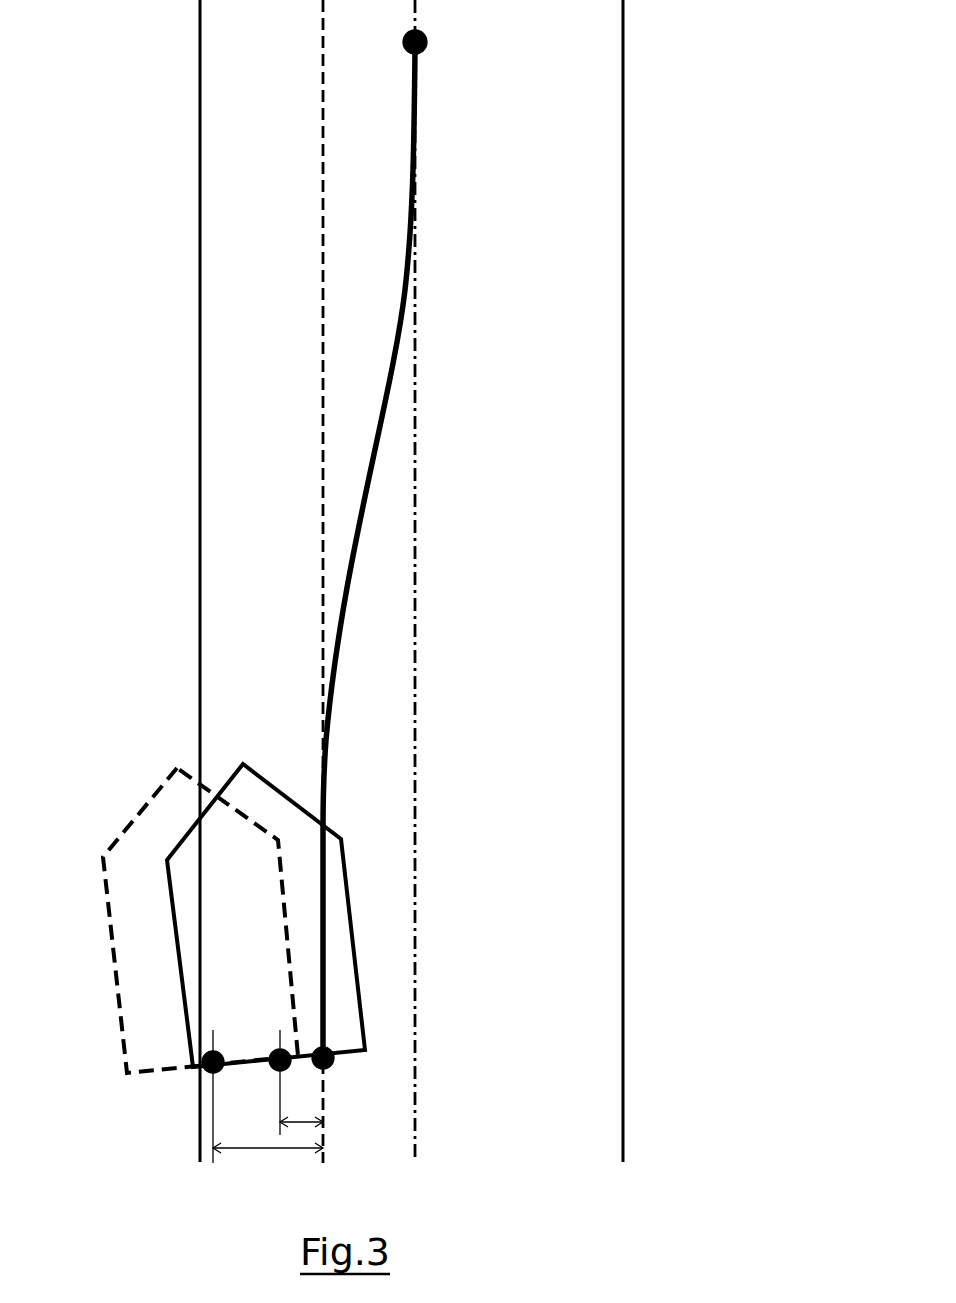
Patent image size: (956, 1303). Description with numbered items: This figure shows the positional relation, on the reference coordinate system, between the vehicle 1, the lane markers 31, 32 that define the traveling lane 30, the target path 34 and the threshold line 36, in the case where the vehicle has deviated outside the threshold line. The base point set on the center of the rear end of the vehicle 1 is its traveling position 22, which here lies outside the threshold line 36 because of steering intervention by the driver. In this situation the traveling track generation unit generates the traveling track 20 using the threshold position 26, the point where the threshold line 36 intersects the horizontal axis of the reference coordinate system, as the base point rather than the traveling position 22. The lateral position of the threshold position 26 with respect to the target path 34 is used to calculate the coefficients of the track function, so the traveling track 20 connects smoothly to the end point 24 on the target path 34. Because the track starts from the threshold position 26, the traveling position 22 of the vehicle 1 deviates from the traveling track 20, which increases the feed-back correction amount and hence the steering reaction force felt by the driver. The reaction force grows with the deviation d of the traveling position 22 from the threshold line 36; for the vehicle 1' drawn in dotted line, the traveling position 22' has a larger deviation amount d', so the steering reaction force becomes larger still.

The vehicle 1 is at (235, 913).
The vehicle 1' is at (163, 920).
The traveling track 20 is at (352, 543).
The traveling position 22 is at (335, 1115).
The traveling position 22' is at (162, 1106).
The end point 24 is at (425, 50).
The threshold position 26 is at (335, 1063).
The traveling lane 30 is at (262, 148).
The lane marker 31 is at (200, 236).
The lane marker 32 is at (623, 360).
The target path 34 is at (413, 565).
The threshold line 36 is at (322, 357).
The deviation d is at (301, 1111).
The deviation amount d' is at (268, 1141).